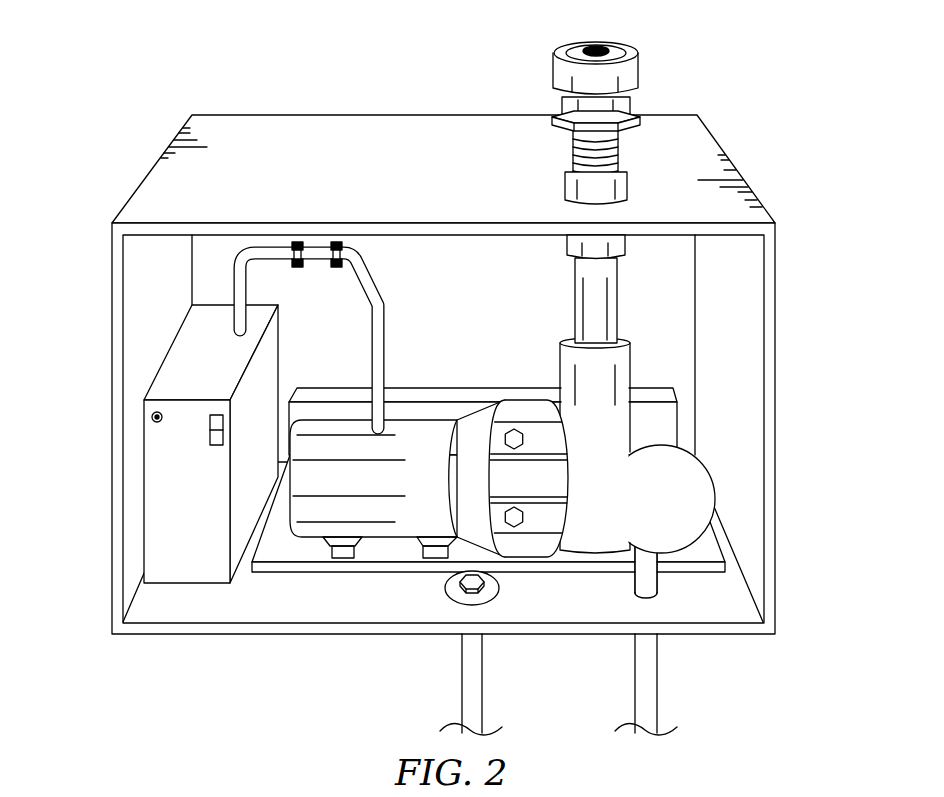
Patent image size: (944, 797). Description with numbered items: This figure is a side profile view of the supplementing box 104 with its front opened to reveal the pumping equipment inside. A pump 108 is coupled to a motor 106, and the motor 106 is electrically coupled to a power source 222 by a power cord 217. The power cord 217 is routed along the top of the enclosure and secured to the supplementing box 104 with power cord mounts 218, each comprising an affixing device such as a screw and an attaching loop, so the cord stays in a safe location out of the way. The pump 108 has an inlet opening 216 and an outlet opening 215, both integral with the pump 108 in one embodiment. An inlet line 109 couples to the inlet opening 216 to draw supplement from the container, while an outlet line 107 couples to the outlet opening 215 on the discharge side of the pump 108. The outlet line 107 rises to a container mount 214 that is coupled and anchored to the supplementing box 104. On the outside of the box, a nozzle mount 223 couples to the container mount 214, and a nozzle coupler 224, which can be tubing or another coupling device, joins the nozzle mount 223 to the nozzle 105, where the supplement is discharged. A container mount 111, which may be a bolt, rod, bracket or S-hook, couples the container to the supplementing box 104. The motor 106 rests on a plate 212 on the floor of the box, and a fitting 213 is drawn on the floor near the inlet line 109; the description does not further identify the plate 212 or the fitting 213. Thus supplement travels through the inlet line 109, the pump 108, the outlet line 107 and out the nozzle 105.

The supplementing box 104 is at (133, 188).
The nozzle 105 is at (581, 123).
The motor 106 is at (430, 490).
The outlet line 107 is at (575, 300).
The pump 108 is at (702, 484).
The inlet line 109 is at (655, 676).
The container mount 111 is at (475, 678).
The base plate 212 is at (395, 573).
The drain fitting 213 is at (500, 590).
The container mount 214 is at (620, 250).
The outlet opening 215 is at (560, 367).
The inlet opening 216 is at (650, 582).
The power cord 217 is at (387, 330).
The power cord mounts 218 is at (300, 242).
The power source 222 is at (157, 462).
The nozzle mount 223 is at (562, 188).
The nozzle coupler 224 is at (620, 157).